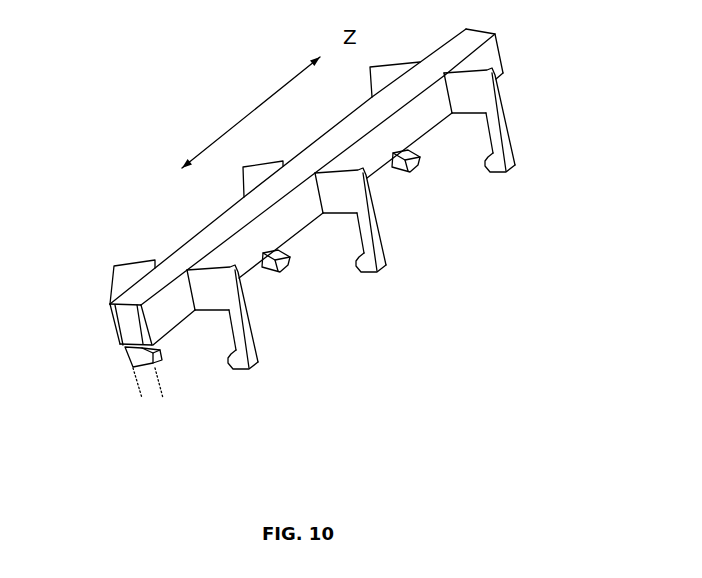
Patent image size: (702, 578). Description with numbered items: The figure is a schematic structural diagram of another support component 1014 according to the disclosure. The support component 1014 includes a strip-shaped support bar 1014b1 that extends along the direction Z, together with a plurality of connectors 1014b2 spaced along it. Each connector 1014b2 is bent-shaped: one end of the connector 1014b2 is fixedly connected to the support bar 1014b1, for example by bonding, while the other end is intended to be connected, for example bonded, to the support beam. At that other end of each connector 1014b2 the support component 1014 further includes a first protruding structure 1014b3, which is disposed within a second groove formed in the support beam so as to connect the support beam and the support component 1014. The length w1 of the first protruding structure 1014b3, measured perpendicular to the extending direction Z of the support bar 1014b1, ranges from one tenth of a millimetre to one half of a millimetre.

The support component 1014 is at (117, 156).
The support bar 1014b1 is at (386, 160).
The connector 1014b2 is at (250, 314).
The first protruding structure 1014b3 is at (230, 371).
The length of the first protruding structure w1 is at (192, 377).